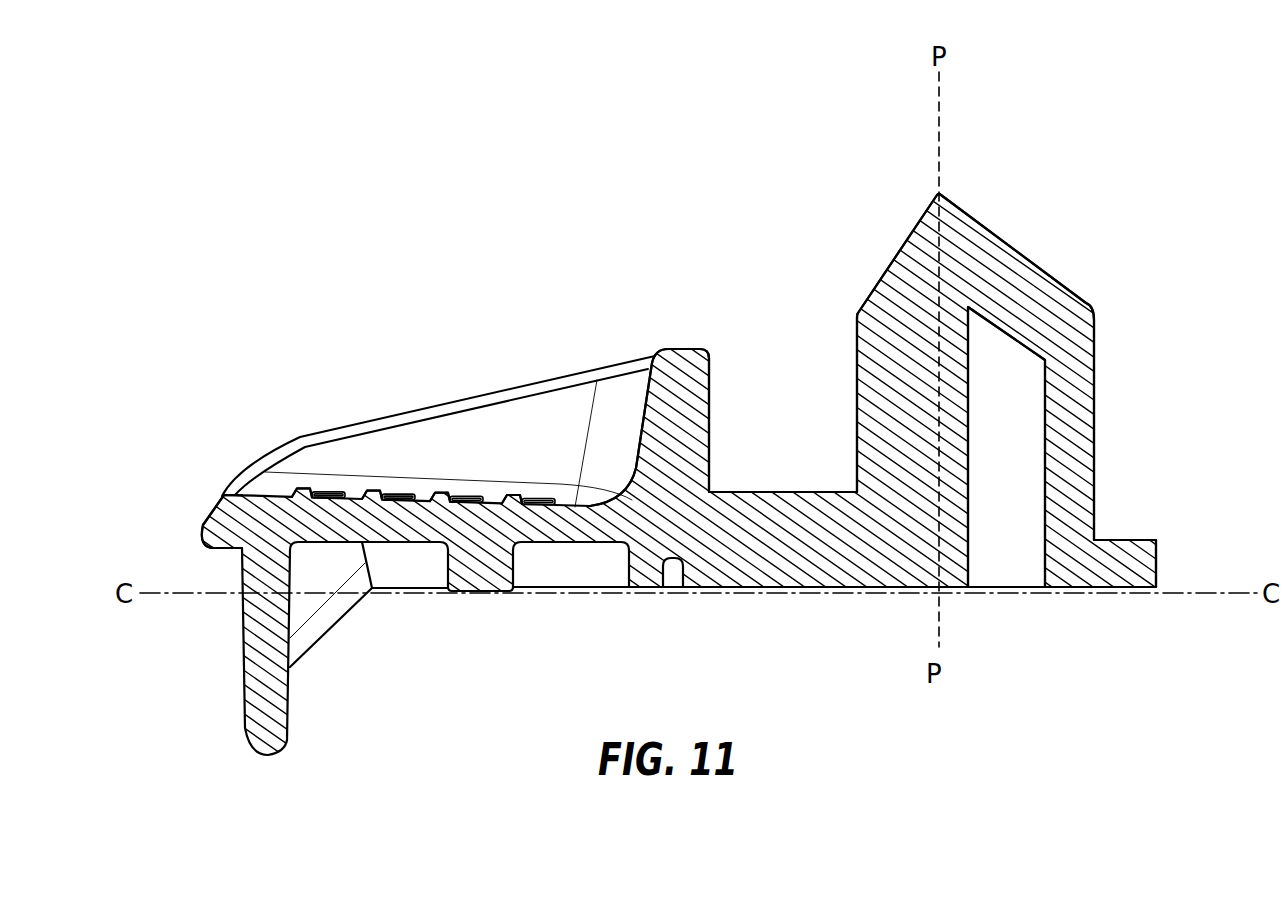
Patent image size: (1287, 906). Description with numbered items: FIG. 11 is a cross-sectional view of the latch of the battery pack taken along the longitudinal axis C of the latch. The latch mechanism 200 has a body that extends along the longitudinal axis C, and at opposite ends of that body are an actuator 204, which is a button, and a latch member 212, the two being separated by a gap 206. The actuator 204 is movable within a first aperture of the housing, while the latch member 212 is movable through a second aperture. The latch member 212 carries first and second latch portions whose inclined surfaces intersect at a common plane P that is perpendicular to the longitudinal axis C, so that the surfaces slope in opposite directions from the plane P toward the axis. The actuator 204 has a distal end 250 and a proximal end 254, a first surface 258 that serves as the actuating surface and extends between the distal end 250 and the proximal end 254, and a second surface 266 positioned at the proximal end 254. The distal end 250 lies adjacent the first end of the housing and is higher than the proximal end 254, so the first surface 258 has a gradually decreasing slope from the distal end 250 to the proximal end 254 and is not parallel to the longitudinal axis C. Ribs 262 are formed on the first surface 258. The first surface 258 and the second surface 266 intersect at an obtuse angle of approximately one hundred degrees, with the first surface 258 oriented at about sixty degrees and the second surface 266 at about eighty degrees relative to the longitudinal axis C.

The latch mechanism 200 is at (355, 258).
The actuator 204 is at (345, 437).
The gap 206 is at (775, 352).
The latch member 212 is at (998, 270).
The distal end 250 is at (198, 524).
The proximal end 254 is at (653, 474).
The first surface 258 is at (503, 500).
The ribs 262 is at (442, 493).
The second surface 266 is at (641, 413).